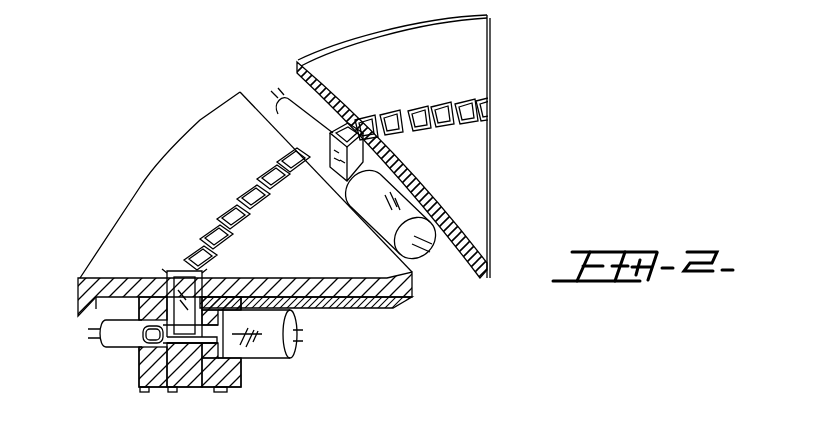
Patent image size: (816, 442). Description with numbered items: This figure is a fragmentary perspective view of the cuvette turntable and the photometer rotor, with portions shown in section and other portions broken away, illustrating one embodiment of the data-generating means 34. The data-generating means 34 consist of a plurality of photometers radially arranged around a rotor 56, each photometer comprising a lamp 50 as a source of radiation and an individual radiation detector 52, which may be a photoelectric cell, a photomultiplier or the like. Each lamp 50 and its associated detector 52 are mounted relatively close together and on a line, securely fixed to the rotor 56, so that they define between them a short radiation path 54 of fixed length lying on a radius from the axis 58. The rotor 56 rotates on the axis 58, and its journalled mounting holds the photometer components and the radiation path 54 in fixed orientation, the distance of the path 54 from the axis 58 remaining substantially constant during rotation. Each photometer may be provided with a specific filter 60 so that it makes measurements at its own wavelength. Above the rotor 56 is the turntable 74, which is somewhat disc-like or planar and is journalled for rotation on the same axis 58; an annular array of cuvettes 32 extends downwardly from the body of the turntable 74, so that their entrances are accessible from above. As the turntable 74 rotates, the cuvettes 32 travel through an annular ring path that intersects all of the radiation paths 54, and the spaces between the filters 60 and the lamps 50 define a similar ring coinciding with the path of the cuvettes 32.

The data-generating means 34 is at (124, 174).
The turntable 74 is at (110, 252).
The rotor 56 is at (347, 307).
The radiation path 54 is at (172, 347).
The cuvette 32 is at (177, 271).
The lamp 50 is at (292, 98).
The radiation detector 52 is at (408, 184).
The filter 60 is at (350, 200).
The axis 58 is at (441, 436).